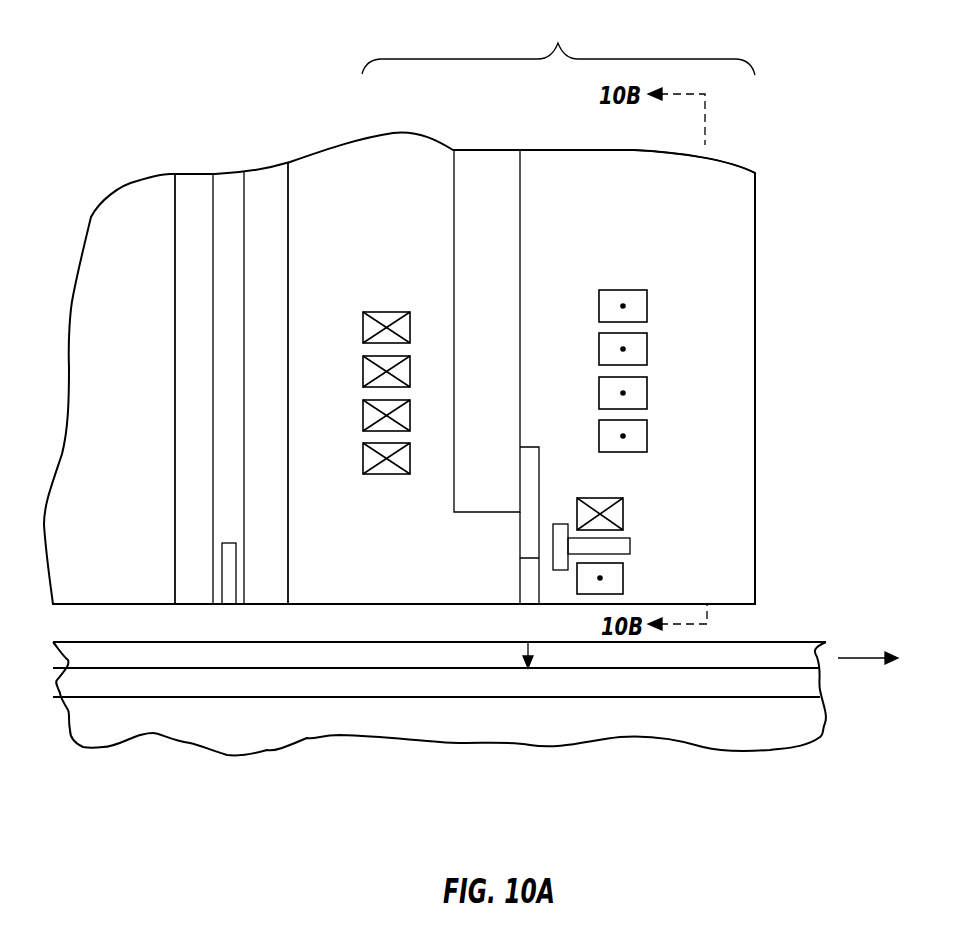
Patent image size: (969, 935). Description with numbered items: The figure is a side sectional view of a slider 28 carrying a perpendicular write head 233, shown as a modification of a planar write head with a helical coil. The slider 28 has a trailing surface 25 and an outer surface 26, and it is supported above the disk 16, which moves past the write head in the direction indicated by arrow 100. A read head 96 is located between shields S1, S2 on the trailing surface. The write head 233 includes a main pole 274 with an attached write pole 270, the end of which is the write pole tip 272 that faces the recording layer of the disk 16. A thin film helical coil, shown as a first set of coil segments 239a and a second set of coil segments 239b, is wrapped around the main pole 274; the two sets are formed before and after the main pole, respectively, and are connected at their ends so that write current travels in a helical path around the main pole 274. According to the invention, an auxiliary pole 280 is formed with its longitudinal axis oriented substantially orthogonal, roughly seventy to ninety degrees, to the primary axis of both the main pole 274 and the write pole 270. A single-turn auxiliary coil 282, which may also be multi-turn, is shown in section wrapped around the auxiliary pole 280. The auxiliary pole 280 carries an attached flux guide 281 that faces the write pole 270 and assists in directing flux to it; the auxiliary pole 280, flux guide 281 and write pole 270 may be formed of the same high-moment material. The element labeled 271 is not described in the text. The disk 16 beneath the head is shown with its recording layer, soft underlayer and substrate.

The perpendicular write head 233 is at (558, 42).
The slider 28 is at (738, 218).
The outer surface 26 is at (758, 377).
The trailing surface 25 is at (171, 263).
The shield S1 is at (185, 572).
The shield S2 is at (273, 582).
The read head 96 is at (228, 542).
The first coil segments 239a is at (378, 312).
The second coil segments 239b is at (647, 305).
The main pole 274 is at (514, 324).
The write pole 270 is at (530, 462).
The main pole layer 271 is at (528, 543).
The write pole tip 272 is at (528, 595).
The flux guide 281 is at (558, 572).
The auxiliary pole 280 is at (631, 547).
The auxiliary coil 282 is at (624, 513).
The disk 16 is at (141, 756).
The arrow 100 is at (866, 655).